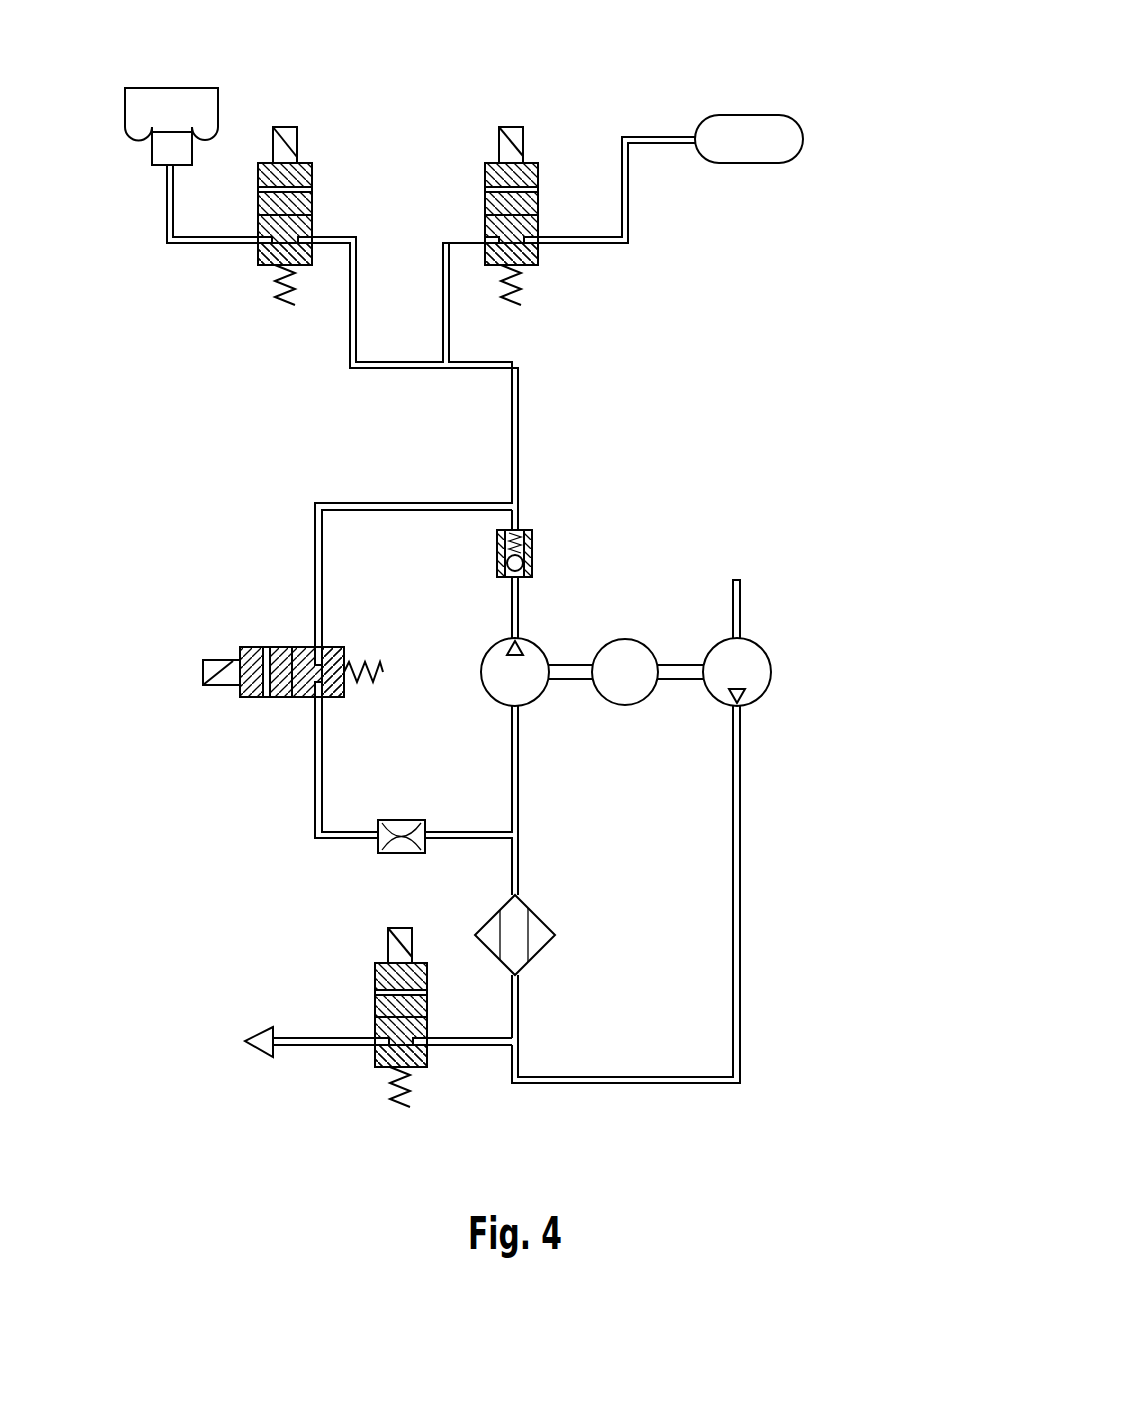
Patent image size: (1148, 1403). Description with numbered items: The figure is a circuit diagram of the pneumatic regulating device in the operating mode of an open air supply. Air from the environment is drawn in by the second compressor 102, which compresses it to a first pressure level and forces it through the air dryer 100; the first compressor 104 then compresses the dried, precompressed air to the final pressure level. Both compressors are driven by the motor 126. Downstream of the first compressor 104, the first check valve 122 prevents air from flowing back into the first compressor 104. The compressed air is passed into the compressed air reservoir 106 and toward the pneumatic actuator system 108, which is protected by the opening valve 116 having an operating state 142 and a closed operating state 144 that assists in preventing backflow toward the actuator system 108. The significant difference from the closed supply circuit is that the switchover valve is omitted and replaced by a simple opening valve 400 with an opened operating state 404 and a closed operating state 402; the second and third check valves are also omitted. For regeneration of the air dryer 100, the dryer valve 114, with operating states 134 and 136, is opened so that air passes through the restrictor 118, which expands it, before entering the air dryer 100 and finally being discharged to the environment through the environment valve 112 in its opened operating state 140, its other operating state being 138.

The air dryer 100 is at (542, 950).
The second compressor 102 is at (756, 668).
The first compressor 104 is at (493, 660).
The compressed air reservoir 106 is at (745, 127).
The pneumatic actuator system 108 is at (171, 98).
The environment valve 112 is at (383, 1013).
The dryer valve 114 is at (292, 647).
The opening valve 116 is at (313, 213).
The restrictor 118 is at (393, 854).
The first check valve 122 is at (497, 551).
The motor 126 is at (627, 640).
The operating state 134 is at (333, 687).
The operating state 136 is at (253, 687).
The operating state 138 is at (387, 1056).
The operating state 140 is at (387, 975).
The operating state 142 is at (313, 173).
The closed operating state of the opening valve 144 is at (272, 253).
The opening valve 400 is at (488, 213).
The closed operating state 402 is at (535, 255).
The opened operating state 404 is at (533, 172).